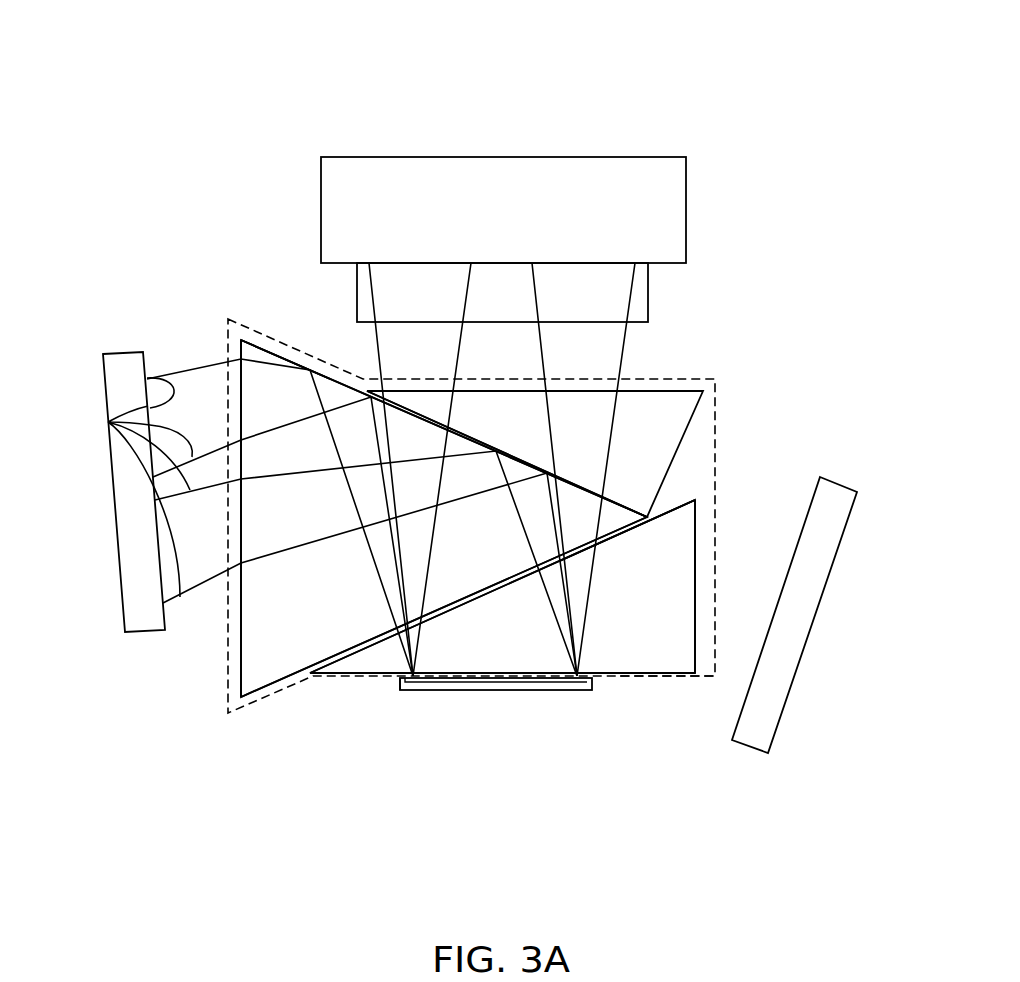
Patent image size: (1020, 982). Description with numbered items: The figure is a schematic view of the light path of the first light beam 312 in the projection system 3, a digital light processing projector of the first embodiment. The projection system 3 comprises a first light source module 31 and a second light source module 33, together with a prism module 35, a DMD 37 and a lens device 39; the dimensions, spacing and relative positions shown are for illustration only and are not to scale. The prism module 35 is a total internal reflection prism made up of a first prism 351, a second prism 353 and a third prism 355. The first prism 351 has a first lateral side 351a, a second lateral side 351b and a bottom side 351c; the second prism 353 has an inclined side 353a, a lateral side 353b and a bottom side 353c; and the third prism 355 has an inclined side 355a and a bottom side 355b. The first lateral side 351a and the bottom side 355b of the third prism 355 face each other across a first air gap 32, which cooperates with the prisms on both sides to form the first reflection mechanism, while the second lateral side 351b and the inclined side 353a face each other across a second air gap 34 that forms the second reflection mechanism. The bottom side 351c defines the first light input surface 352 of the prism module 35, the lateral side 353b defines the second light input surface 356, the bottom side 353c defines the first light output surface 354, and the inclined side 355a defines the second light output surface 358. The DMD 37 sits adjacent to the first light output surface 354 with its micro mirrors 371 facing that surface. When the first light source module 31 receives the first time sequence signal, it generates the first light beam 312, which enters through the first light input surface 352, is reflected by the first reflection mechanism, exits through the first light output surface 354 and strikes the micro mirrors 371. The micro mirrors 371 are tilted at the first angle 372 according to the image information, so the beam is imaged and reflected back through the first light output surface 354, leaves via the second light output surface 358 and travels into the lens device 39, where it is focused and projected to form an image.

The projection system 3 is at (535, 80).
The first light source module 31 is at (118, 550).
The first light beam 312 is at (108, 422).
The first air gap 32 is at (376, 395).
The second light source module 33 is at (843, 532).
The second air gap 34 is at (603, 535).
The prism module 35 is at (230, 622).
The first prism 351 is at (250, 655).
The first lateral side 351a is at (322, 375).
The second lateral side 351b is at (360, 641).
The bottom side 351c is at (242, 492).
The first light input surface 352 is at (242, 349).
The second prism 353 is at (590, 652).
The inclined side 353a is at (613, 535).
The lateral side 353b is at (694, 588).
The bottom side 353c is at (330, 677).
The first light output surface 354 is at (662, 674).
The third prism 355 is at (682, 405).
The inclined side 355a is at (471, 391).
The bottom side 355b is at (465, 435).
The second light input surface 356 is at (698, 567).
The second light output surface 358 is at (657, 392).
The DMD 37 is at (508, 690).
The micro mirrors 371 is at (406, 686).
The first angle 372 is at (443, 673).
The lens device 39 is at (580, 157).